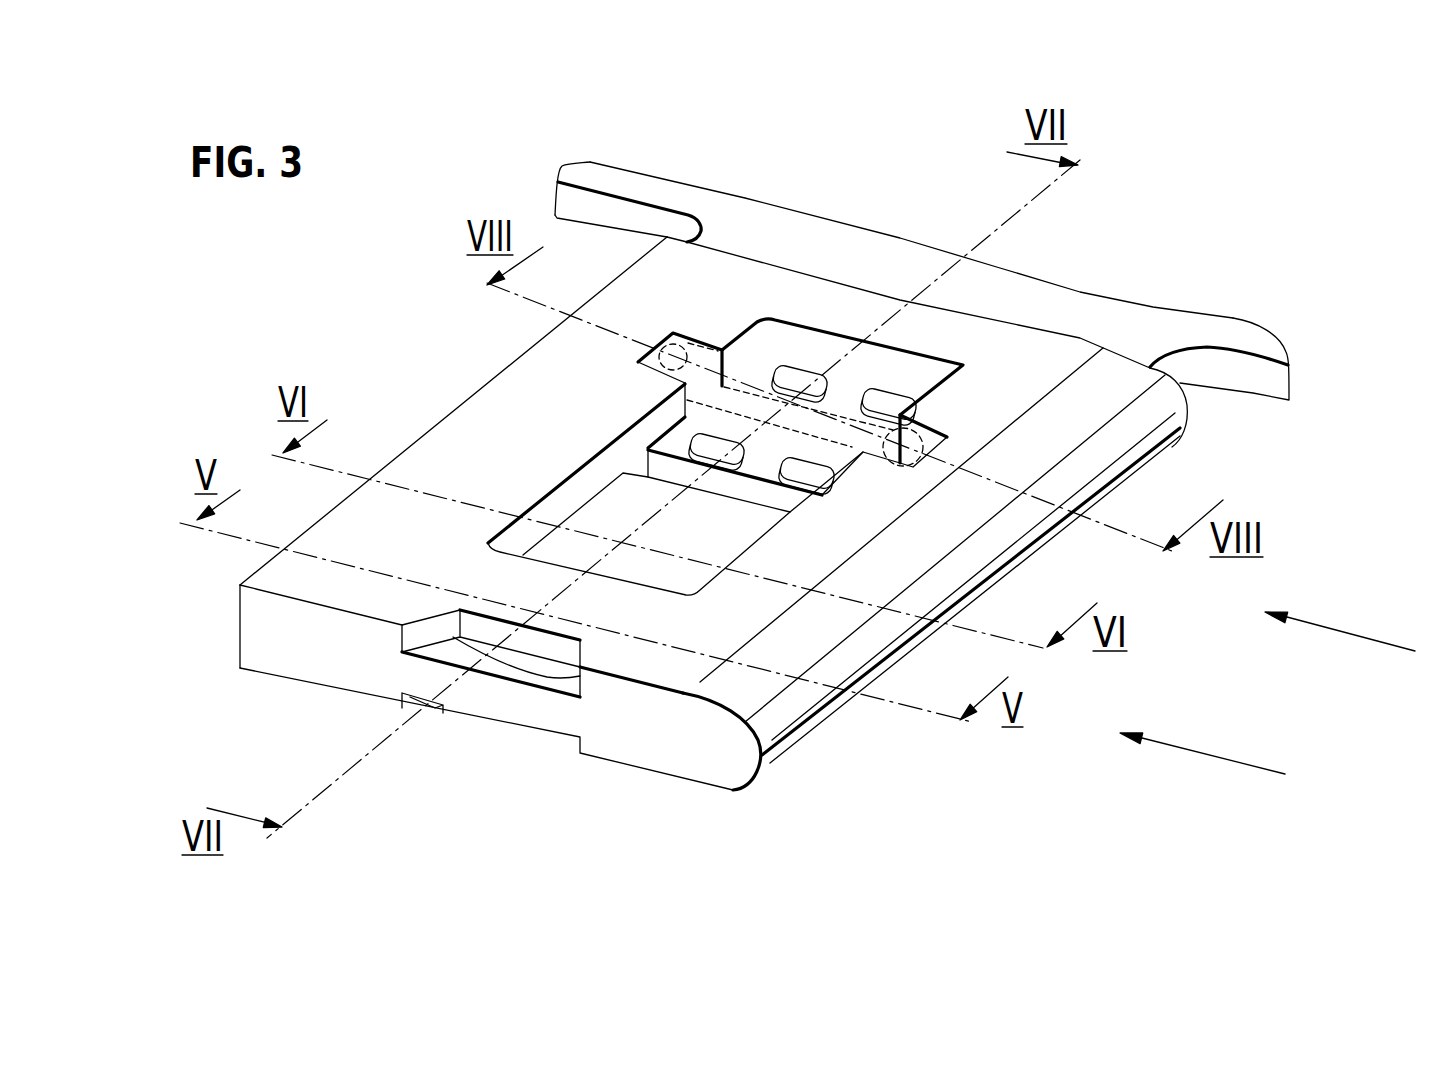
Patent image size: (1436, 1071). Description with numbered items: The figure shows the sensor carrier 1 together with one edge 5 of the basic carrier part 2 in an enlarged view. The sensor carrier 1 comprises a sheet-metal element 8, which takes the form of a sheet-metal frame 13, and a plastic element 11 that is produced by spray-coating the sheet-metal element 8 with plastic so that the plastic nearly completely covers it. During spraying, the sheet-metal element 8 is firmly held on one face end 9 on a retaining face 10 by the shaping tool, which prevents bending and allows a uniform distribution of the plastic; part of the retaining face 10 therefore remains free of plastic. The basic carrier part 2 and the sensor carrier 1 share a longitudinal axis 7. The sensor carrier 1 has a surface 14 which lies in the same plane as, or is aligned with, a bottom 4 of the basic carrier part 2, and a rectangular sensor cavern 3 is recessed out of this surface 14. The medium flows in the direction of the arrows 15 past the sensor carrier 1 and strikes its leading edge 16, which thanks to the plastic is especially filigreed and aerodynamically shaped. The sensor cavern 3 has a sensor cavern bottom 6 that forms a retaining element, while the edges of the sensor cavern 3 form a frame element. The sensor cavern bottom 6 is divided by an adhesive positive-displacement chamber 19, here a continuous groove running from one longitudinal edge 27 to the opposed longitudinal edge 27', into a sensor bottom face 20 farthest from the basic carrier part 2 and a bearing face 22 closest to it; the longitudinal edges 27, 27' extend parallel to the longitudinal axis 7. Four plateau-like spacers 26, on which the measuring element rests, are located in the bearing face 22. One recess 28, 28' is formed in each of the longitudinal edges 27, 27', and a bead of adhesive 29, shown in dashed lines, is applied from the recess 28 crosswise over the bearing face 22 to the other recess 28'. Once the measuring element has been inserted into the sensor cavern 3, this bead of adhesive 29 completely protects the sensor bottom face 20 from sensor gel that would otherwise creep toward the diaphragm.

The sensor carrier 1 is at (647, 766).
The basic carrier part 2 is at (1160, 320).
The sensor cavern 3 is at (563, 539).
The bottom of the basic carrier part 4 is at (628, 178).
The edge of the basic carrier part 5 is at (1256, 372).
The sensor cavern bottom 6 is at (784, 401).
The longitudinal axis 7 is at (930, 280).
The sheet-metal element 8 is at (491, 715).
The face end 9 is at (491, 715).
The retaining face 10 is at (491, 715).
The plastic element 11 is at (860, 310).
The sheet-metal frame 13 is at (507, 668).
The surface 14 is at (447, 463).
The arrows 15 is at (1363, 638).
The leading edge 16 is at (1017, 550).
The adhesive positive-displacement chamber 19 is at (637, 463).
The sensor bottom face 20 is at (678, 538).
The bearing face 22 is at (725, 447).
The spacers 26 is at (787, 480).
The longitudinal edge 27 is at (735, 540).
The opposed longitudinal edge 27' is at (618, 404).
The recess 28 is at (958, 403).
The recess 28' is at (637, 307).
The bead of adhesive 29 is at (818, 452).